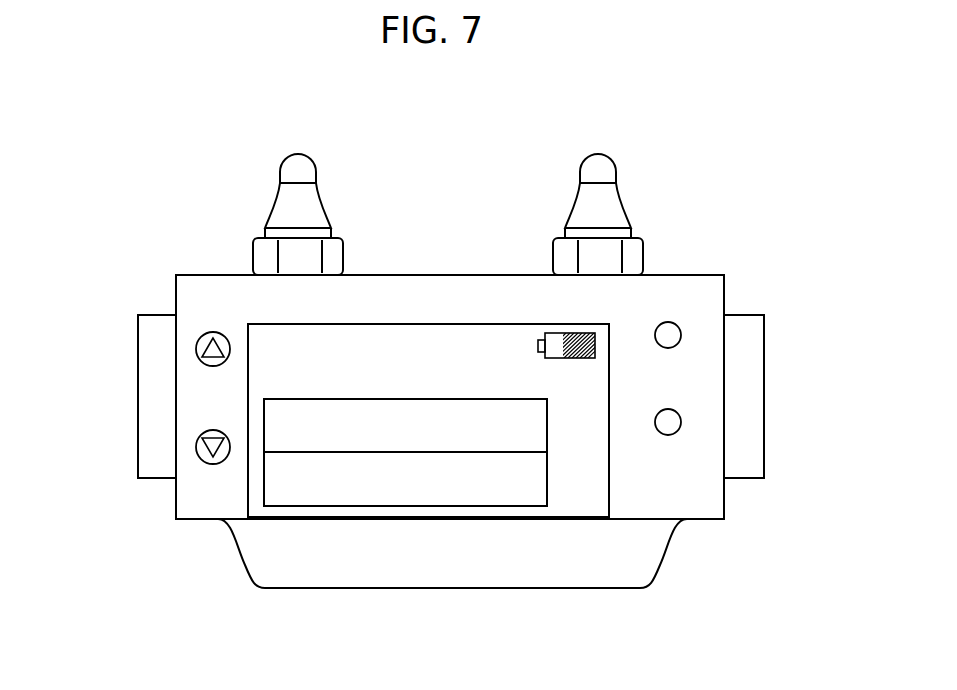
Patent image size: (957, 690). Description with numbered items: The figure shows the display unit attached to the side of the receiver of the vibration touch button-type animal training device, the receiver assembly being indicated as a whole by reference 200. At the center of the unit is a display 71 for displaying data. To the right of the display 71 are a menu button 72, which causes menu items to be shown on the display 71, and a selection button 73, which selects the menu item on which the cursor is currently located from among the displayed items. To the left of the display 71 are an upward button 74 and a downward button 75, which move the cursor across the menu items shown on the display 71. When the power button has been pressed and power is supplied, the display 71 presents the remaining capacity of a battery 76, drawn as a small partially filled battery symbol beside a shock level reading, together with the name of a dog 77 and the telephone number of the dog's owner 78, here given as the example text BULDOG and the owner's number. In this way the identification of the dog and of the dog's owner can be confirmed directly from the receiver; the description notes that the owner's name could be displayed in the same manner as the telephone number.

The collar-mounted shock unit 200 is at (660, 172).
The display 71 is at (573, 507).
The menu button 72 is at (681, 333).
The selection button 73 is at (681, 420).
The upward button 74 is at (196, 357).
The downward button 75 is at (196, 453).
The remaining capacity of a battery 76 is at (567, 335).
The name of a dog 77 is at (287, 452).
The telephone number of the dog's owner 78 is at (457, 508).